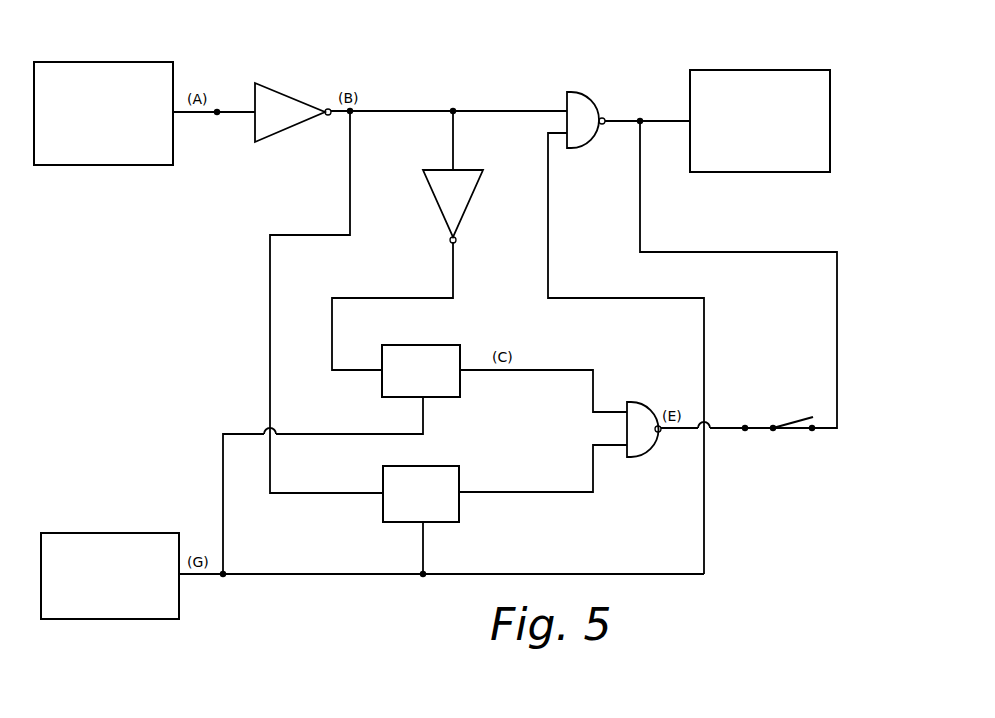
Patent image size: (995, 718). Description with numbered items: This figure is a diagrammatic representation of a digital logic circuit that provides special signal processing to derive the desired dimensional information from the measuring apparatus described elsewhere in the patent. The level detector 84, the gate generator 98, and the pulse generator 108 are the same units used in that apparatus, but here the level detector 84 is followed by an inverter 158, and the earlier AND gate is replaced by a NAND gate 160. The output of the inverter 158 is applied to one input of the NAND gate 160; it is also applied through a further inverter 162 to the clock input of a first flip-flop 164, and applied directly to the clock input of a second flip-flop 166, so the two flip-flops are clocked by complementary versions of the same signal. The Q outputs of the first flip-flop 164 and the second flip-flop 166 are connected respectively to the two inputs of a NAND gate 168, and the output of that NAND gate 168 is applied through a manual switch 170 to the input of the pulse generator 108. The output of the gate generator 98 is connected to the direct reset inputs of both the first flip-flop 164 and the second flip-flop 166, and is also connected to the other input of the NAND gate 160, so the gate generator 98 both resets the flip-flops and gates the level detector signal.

The level detector 84 is at (150, 145).
The inverter 158 is at (283, 118).
The NAND gate 160 is at (583, 112).
The pulse generator 108 is at (813, 78).
The inverter 162 is at (455, 205).
The first flip-flop 164 is at (443, 360).
The second flip-flop 166 is at (438, 477).
The NAND gate 168 is at (638, 418).
The manual switch 170 is at (795, 418).
The gate generator 98 is at (140, 548).